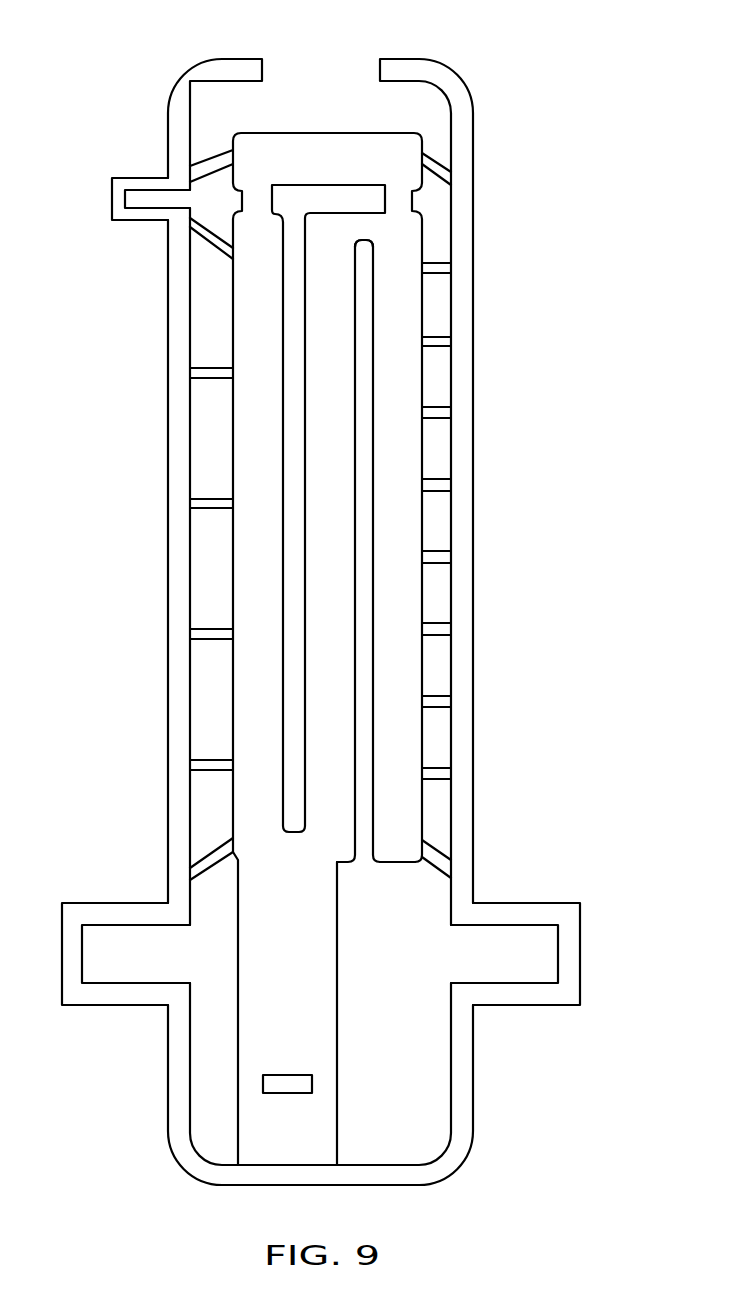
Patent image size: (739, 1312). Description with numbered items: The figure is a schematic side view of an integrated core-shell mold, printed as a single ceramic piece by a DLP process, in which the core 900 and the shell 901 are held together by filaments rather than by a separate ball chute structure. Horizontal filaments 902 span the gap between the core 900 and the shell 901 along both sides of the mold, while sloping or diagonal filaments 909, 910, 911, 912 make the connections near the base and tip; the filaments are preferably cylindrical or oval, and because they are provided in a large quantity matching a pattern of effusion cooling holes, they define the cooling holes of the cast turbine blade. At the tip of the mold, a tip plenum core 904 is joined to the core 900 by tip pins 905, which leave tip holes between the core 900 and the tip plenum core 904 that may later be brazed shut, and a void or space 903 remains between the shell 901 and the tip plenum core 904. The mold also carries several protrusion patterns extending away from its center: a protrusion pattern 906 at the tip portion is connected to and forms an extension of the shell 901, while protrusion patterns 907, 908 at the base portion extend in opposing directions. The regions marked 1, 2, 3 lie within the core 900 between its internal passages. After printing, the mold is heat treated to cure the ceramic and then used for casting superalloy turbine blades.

The core 900 is at (337, 1003).
The shell 901 is at (463, 590).
The horizontal filaments 902 is at (203, 495).
The void or space 903 is at (413, 110).
The tip plenum core 904 is at (308, 150).
The tip pins 905 is at (413, 195).
The protrusion pattern 906 is at (165, 197).
The protrusion pattern 907 is at (127, 958).
The protrusion pattern 908 is at (515, 958).
The sloping filament 909 is at (210, 860).
The sloping filament 910 is at (443, 860).
The sloping filament 911 is at (205, 227).
The sloping filament 912 is at (203, 168).
The first passage 1 is at (319, 508).
The second passage 2 is at (348, 418).
The third passage 3 is at (397, 676).